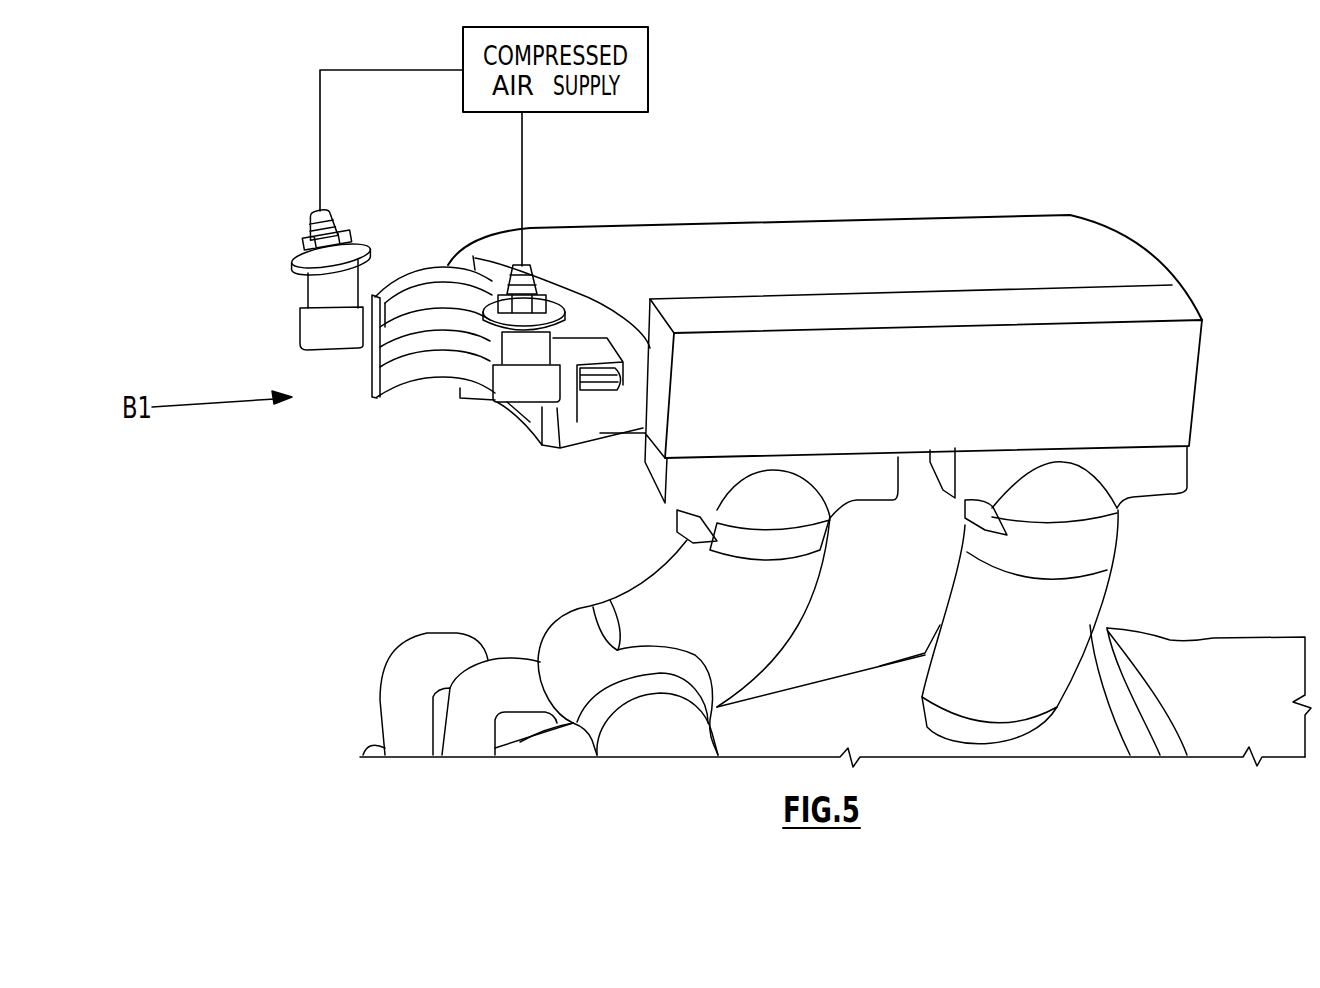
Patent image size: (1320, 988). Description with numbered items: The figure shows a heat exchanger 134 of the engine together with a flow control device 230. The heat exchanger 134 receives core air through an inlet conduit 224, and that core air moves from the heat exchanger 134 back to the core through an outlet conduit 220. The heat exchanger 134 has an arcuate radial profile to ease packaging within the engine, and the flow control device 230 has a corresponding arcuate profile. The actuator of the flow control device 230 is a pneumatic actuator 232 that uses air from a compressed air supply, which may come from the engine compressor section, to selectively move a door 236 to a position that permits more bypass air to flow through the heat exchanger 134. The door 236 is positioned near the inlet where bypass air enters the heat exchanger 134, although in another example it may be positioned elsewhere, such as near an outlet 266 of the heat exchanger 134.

The heat exchanger 134 is at (968, 239).
The outlet conduit 220 is at (675, 590).
The inlet conduit 224 is at (1087, 595).
The flow control device 230 is at (345, 179).
The pneumatic actuator 232 is at (318, 284).
The door 236 is at (413, 268).
The outlet 266 is at (1220, 254).